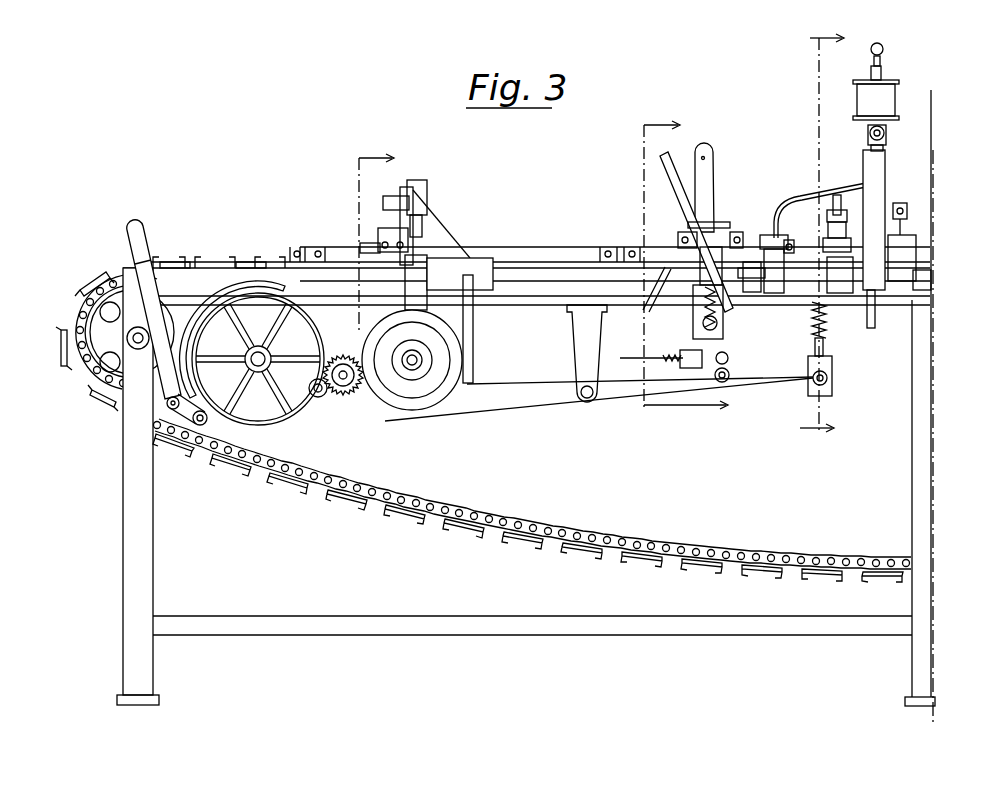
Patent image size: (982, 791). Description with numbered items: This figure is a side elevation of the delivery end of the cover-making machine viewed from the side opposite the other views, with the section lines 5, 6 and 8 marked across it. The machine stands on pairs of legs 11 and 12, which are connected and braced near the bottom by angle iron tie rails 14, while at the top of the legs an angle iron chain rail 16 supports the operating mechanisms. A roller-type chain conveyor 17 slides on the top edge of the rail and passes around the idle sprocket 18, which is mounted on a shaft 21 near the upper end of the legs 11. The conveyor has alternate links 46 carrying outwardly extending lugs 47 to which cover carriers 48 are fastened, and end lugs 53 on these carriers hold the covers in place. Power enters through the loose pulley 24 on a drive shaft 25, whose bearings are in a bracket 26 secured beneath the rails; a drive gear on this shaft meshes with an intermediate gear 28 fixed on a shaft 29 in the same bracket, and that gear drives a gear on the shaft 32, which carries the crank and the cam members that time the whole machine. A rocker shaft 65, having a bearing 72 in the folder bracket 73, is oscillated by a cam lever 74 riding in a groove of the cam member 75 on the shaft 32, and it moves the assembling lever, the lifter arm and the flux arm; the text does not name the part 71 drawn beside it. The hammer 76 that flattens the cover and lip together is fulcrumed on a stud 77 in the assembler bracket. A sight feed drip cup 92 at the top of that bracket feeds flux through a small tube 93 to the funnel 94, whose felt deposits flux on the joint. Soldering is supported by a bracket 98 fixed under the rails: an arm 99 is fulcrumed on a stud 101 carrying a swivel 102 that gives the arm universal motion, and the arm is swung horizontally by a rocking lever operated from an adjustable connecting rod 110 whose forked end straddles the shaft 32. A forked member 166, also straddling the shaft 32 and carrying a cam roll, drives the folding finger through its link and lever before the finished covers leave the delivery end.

The section line 5- 5 is at (822, 237).
The section line 6- 6 is at (686, 264).
The section line 8- 8 is at (376, 235).
The legs 11 is at (147, 496).
The legs 12 is at (912, 489).
The angle iron tie rails 14 is at (361, 617).
The angle iron chain rail 16 is at (200, 285).
The chain conveyor 17 is at (620, 540).
The sprocket 18 is at (92, 339).
The shaft 21 is at (128, 341).
The loose pulley 24 is at (258, 368).
The drive shaft 25 is at (268, 354).
The bracket 26 is at (318, 315).
The intermediate gear 28 is at (318, 398).
The shaft 29 is at (350, 392).
The shaft 32 is at (416, 362).
The alternate links 46 is at (416, 500).
The lugs 47 is at (480, 516).
The cover carriers 48 is at (167, 268).
The end lugs 53 is at (243, 266).
The rocker shaft 65 is at (528, 268).
The piston rod 71 is at (874, 328).
The bearing 72 is at (452, 266).
The folder bracket 73 is at (432, 242).
The cam lever 74 is at (474, 334).
The cam member 75 is at (424, 371).
The hammer 76 is at (833, 199).
The stud 77 is at (826, 238).
The sight feed drip cup 92 is at (889, 98).
The tube 93 is at (789, 196).
The funnel 94 is at (769, 236).
The bracket 98 is at (646, 316).
The arm 99 is at (706, 252).
The stud 101 is at (752, 280).
The swivel 102 is at (710, 278).
The adjustable connecting rod 110 is at (511, 366).
The forked member 166 is at (420, 300).